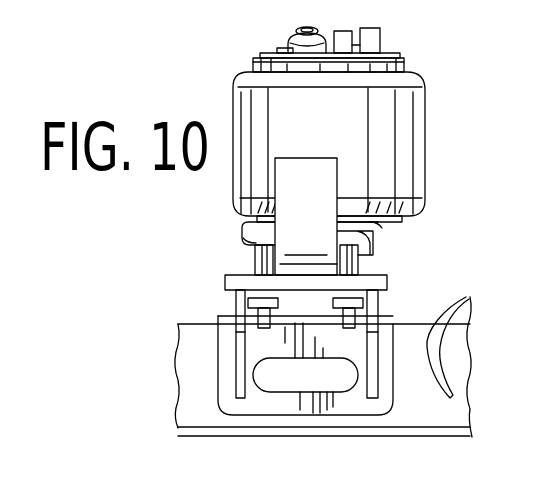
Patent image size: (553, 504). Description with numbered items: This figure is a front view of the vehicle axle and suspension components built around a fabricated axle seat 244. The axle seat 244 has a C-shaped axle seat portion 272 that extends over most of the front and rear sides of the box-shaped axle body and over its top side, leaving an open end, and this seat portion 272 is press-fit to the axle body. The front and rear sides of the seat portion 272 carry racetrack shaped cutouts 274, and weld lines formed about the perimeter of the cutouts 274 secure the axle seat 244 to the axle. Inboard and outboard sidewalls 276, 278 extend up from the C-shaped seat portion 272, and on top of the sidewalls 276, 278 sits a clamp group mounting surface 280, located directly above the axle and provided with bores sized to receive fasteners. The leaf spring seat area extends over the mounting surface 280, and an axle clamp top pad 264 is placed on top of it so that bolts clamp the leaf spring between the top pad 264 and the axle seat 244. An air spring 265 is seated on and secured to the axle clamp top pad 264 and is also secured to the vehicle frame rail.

The air spring 265 is at (407, 121).
The axle clamp top pad 264 is at (382, 245).
The clamp group mounting surface 280 is at (238, 278).
The inboard sidewall 276 is at (233, 300).
The outboard sidewall 278 is at (366, 303).
The fabricated axle seat 244 is at (374, 324).
The C-shaped axle seat portion 272 is at (258, 401).
The racetrack shaped cutouts 274 is at (337, 398).